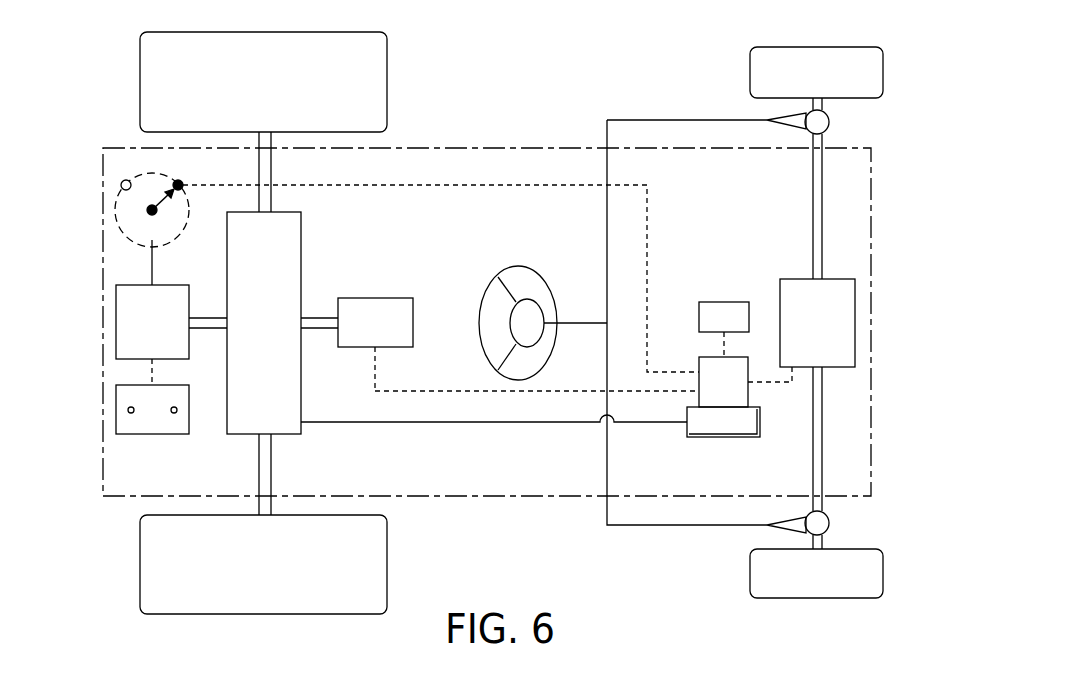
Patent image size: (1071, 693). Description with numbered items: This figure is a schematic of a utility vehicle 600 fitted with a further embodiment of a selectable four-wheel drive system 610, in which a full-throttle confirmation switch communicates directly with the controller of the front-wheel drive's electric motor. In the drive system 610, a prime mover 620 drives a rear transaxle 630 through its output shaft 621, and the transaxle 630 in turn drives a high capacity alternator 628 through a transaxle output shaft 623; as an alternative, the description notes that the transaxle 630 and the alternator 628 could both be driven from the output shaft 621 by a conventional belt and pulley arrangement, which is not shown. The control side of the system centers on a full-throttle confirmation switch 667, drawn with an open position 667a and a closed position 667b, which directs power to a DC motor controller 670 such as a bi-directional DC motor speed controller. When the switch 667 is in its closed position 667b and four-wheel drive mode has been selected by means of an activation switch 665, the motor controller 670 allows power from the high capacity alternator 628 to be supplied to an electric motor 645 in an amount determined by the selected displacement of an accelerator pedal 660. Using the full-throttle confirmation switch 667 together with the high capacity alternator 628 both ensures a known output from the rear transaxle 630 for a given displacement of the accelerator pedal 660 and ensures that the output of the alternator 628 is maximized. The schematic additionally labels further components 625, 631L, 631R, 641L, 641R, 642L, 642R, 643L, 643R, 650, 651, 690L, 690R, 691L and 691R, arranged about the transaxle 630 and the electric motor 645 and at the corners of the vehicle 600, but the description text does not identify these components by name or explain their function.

The utility vehicle 600 is at (478, 112).
The selectable four-wheel drive system 610 is at (165, 484).
The prime mover 620 is at (115, 322).
The output shaft 621 is at (208, 315).
The transaxle output shaft 623 is at (318, 315).
The battery 625 is at (115, 408).
The high capacity alternator 628 is at (350, 348).
The rear transaxle 630 is at (301, 236).
The left front axle shaft 631L is at (272, 159).
The right front axle shaft 631R is at (272, 481).
The left rear axle shaft 641L is at (823, 205).
The right rear axle shaft 641R is at (823, 440).
The left rear wheel shaft 642L is at (823, 103).
The right rear wheel shaft 642R is at (823, 541).
The left rear clutch 643L is at (817, 122).
The right rear clutch 643R is at (817, 523).
The electric motor 645 is at (855, 332).
The steering wheel 650 is at (488, 289).
The steering shaft 651 is at (582, 320).
The accelerator pedal 660 is at (702, 438).
The activation switch 665 is at (723, 300).
The full-throttle confirmation switch 667 is at (122, 237).
The open position 667a is at (122, 182).
The closed position 667b is at (182, 181).
The DC motor controller 670 is at (706, 356).
The left front wheel 690L is at (292, 91).
The right front wheel 690R is at (294, 577).
The left rear wheel 691L is at (846, 85).
The right rear wheel 691R is at (848, 586).